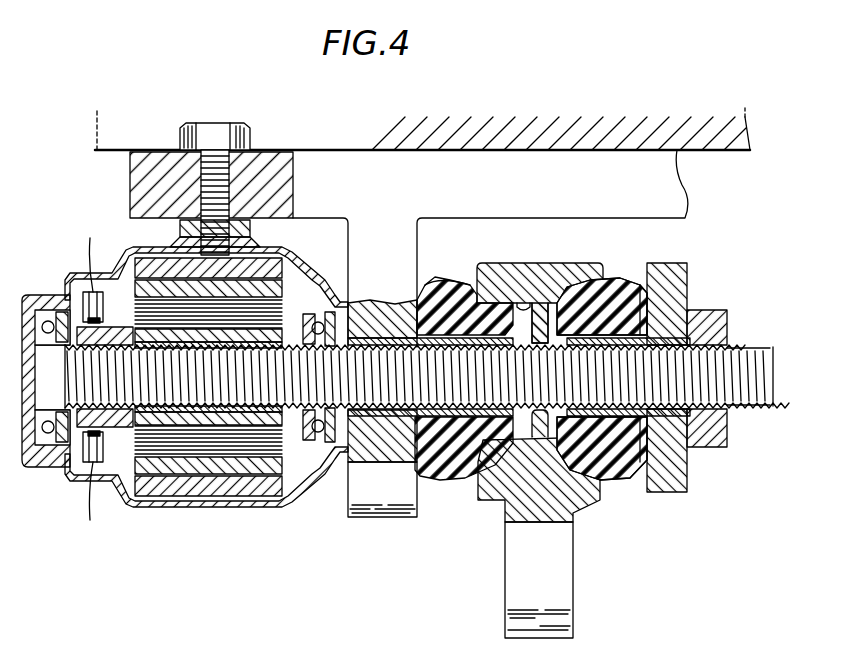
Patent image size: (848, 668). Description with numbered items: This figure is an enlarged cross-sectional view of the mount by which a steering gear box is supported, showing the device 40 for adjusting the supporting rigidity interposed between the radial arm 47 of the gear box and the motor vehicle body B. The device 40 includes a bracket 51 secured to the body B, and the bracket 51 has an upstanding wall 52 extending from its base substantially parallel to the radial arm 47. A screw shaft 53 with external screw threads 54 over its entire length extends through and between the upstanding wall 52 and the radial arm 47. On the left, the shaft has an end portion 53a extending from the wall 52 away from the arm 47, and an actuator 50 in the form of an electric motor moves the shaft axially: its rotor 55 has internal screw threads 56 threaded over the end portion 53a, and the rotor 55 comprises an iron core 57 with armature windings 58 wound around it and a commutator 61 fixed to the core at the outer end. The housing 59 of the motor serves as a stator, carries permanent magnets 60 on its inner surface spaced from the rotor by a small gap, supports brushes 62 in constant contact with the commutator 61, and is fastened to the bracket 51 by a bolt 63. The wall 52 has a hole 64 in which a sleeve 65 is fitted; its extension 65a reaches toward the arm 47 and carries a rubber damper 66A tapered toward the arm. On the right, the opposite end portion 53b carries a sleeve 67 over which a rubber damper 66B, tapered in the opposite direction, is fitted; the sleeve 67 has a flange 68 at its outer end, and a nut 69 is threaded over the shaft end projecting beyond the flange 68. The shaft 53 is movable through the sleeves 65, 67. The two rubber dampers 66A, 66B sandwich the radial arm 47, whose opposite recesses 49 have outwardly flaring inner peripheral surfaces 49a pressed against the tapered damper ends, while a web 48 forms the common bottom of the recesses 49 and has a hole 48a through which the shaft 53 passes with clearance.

The device for adjusting the supporting rigidity 40 is at (502, 148).
The motor vehicle body B is at (698, 158).
The radial arm 47 is at (545, 602).
The web 48 is at (545, 320).
The hole 48a is at (535, 418).
The recesses 49 is at (527, 300).
The inner peripheral surfaces 49a is at (500, 298).
The actuator 50 is at (116, 242).
The bracket 51 is at (325, 150).
The upstanding wall 52 is at (390, 500).
The screw shaft 53 is at (767, 414).
The end portion 53a is at (200, 410).
The opposite end portion 53b is at (690, 440).
The external screw threads 54 is at (296, 295).
The rotor 55 is at (124, 460).
The internal screw threads 56 is at (145, 490).
The iron core 57 is at (262, 445).
The armature windings 58 is at (215, 445).
The housing 59 is at (292, 505).
The permanent magnets 60 is at (173, 490).
The commutator 61 is at (68, 290).
The brushes 62 is at (70, 470).
The bolt 63 is at (208, 128).
The hole 64 is at (393, 300).
The sleeve 65 is at (413, 298).
The extension 65a is at (462, 292).
The rubber damper 66A is at (459, 492).
The rubber damper 66B is at (619, 276).
The sleeve 67 is at (630, 287).
The flange 68 is at (692, 279).
The nut 69 is at (722, 320).